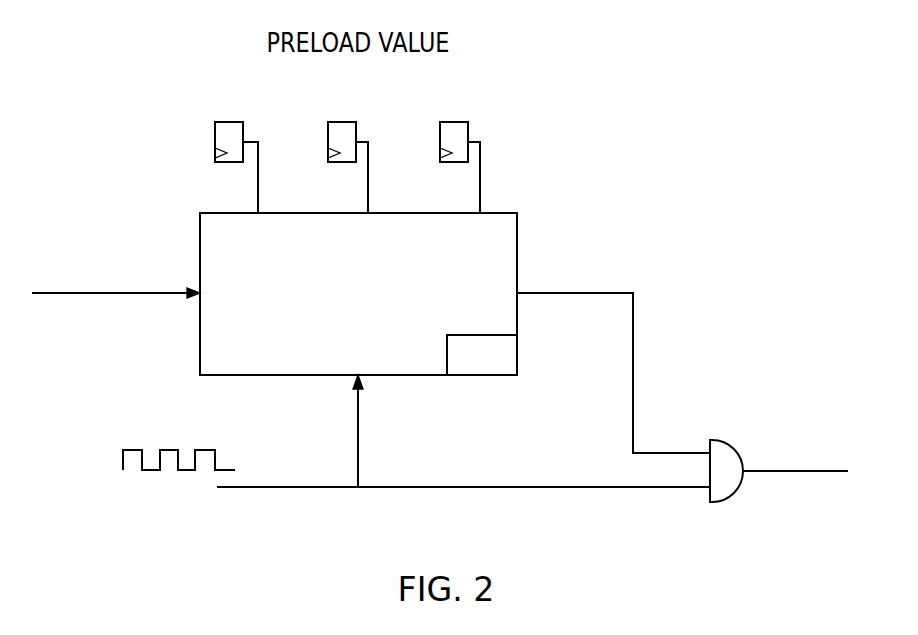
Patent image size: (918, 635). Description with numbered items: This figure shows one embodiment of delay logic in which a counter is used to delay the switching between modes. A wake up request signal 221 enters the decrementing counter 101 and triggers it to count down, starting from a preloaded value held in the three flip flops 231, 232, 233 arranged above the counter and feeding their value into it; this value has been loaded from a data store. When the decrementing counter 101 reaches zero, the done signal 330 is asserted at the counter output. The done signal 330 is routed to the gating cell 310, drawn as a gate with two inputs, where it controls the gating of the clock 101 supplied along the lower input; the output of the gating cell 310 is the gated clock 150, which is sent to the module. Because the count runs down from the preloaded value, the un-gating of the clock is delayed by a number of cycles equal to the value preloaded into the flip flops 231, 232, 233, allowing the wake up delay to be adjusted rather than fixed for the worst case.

The decrementing counter 101 is at (505, 366).
The flip flop 231 is at (228, 122).
The flip flop 232 is at (341, 122).
The flip flop 233 is at (453, 122).
The wake up request signal 221 is at (102, 293).
The done signal 330 is at (585, 293).
The gating cell 310 is at (725, 440).
The gated clock 150 is at (822, 471).